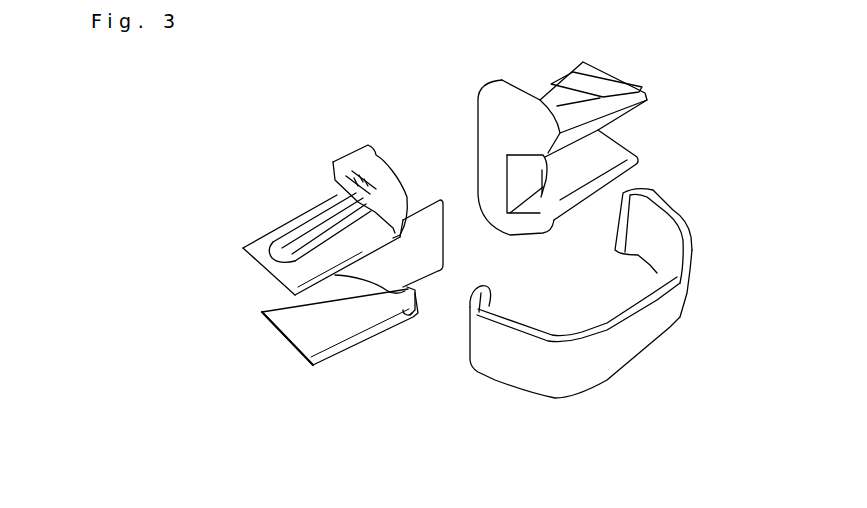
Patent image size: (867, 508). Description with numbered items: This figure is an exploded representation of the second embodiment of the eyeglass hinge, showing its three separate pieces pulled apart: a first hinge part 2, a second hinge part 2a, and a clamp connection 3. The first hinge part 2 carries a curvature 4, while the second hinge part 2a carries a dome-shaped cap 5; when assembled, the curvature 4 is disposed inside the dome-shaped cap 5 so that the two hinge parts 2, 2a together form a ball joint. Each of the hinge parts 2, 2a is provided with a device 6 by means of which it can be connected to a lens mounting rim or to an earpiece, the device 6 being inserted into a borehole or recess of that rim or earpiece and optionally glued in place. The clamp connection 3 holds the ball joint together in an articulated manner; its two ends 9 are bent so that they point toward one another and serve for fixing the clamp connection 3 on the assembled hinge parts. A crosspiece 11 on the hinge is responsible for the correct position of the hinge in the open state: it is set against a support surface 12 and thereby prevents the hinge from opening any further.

The hinge part 2 is at (583, 158).
The hinge part 2a is at (343, 313).
The clamp connection 3 is at (625, 333).
The curvature 4 is at (487, 145).
The dome-shaped cap 5 is at (379, 172).
The device 6 is at (318, 214).
The ends 9 is at (474, 305).
The crosspiece 11 is at (430, 247).
The support surface 12 is at (528, 178).